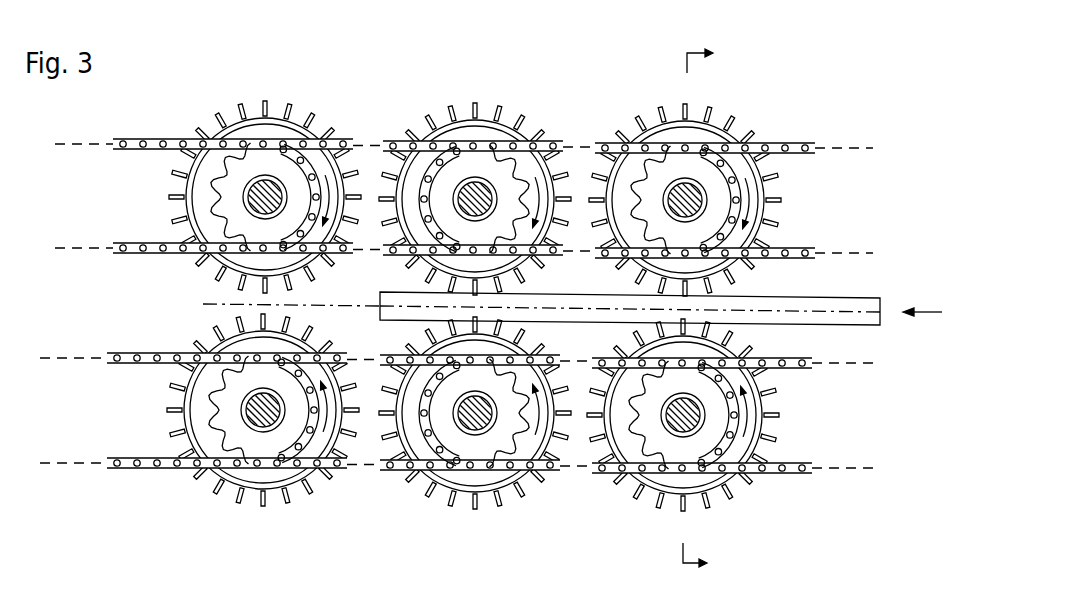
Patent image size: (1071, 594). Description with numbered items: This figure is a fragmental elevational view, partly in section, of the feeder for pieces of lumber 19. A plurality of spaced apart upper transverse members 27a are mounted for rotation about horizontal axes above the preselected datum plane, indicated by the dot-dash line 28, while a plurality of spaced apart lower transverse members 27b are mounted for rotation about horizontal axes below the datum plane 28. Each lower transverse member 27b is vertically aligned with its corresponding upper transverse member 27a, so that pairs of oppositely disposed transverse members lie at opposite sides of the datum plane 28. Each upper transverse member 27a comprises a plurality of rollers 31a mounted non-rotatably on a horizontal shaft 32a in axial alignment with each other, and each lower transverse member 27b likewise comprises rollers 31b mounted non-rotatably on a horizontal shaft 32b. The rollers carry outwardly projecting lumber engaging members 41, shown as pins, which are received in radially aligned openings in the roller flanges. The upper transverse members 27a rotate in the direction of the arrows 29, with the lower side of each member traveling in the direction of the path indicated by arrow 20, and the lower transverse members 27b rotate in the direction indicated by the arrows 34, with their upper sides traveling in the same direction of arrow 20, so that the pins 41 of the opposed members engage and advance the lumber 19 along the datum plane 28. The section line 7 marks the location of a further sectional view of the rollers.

The upper transverse member 27a is at (207, 119).
The lower transverse member 27b is at (320, 485).
The lumber engaging member 41 is at (291, 104).
The arrow 29 is at (330, 194).
The arrow 34 is at (330, 405).
The roller 31a is at (183, 211).
The roller 31b is at (182, 400).
The horizontal shaft 32a is at (248, 191).
The horizontal shaft 32b is at (256, 420).
The datum plane 28 is at (233, 304).
The piece of lumber 19 is at (840, 297).
The arrow 20 is at (922, 337).
The section line VII-VII 7 is at (704, 307).